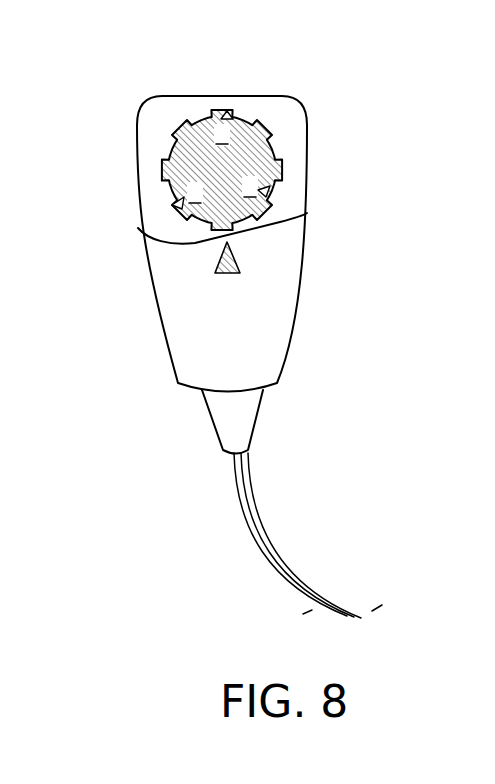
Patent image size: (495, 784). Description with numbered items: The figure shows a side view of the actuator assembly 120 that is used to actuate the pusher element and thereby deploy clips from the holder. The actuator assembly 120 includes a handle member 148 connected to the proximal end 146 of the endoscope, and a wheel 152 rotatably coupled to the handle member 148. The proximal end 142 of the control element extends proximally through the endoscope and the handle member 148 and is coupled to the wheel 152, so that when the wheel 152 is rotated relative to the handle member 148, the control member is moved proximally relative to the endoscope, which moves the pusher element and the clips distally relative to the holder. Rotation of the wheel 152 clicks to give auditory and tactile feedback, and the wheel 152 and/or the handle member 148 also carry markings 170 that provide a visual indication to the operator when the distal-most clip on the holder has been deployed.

The actuator assembly 120 is at (335, 97).
The handle member 148 is at (283, 283).
The wheel 152 is at (198, 148).
The markings 170 is at (267, 189).
The proximal end of the endoscope 146 is at (237, 467).
The proximal end of the control element 142 is at (255, 508).